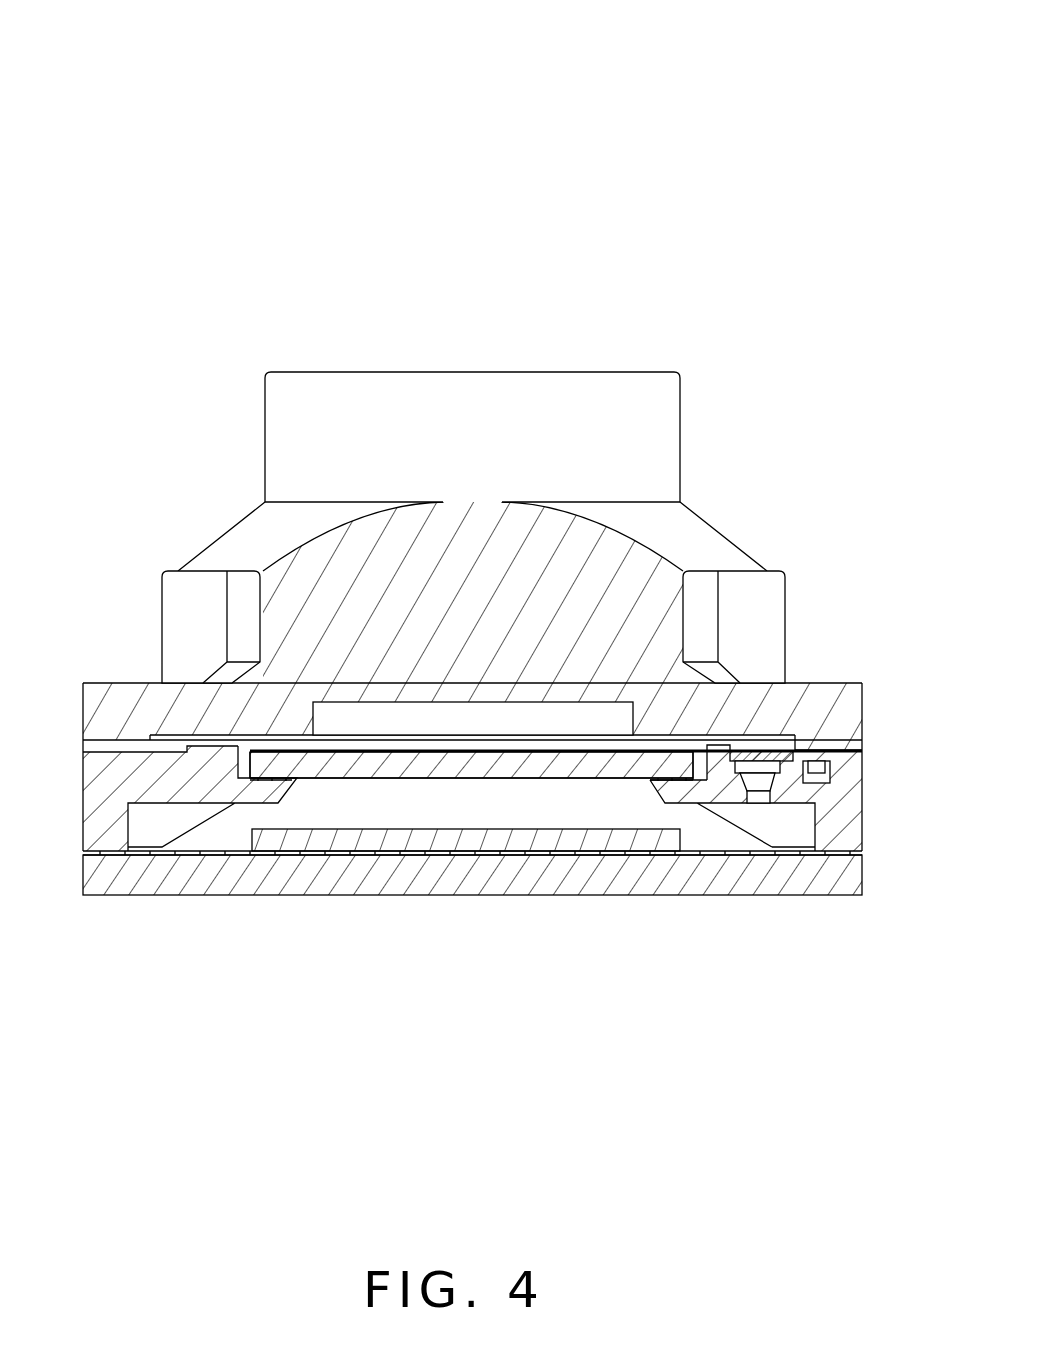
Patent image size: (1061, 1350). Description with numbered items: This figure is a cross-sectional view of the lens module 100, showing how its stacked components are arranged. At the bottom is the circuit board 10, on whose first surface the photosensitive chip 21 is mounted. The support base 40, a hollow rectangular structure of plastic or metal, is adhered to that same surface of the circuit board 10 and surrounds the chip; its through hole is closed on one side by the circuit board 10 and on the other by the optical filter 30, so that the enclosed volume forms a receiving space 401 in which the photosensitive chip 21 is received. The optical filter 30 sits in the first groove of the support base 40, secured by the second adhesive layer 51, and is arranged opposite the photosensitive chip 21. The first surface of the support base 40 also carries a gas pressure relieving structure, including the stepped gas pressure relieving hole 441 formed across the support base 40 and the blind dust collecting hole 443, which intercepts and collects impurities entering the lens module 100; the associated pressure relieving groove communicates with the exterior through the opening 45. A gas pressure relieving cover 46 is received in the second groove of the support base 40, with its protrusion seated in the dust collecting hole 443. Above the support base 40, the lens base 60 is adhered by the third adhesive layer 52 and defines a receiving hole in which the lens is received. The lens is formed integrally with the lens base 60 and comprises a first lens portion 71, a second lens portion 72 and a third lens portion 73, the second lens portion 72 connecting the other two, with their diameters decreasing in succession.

The lens module 100 is at (174, 50).
The circuit board 10 is at (265, 870).
The photosensitive chip 21 is at (410, 845).
The optical filter 30 is at (292, 767).
The support base 40 is at (853, 834).
The receiving space 401 is at (612, 802).
The gas pressure relieving hole 441 is at (760, 766).
The dust collecting hole 443 is at (824, 775).
The opening 45 is at (864, 752).
The gas pressure relieving cover 46 is at (862, 738).
The second adhesive layer 51 is at (684, 758).
The third adhesive layer 52 is at (118, 742).
The lens base 60 is at (120, 700).
The first lens portion 71 is at (766, 621).
The second lens portion 72 is at (696, 540).
The third lens portion 73 is at (651, 442).